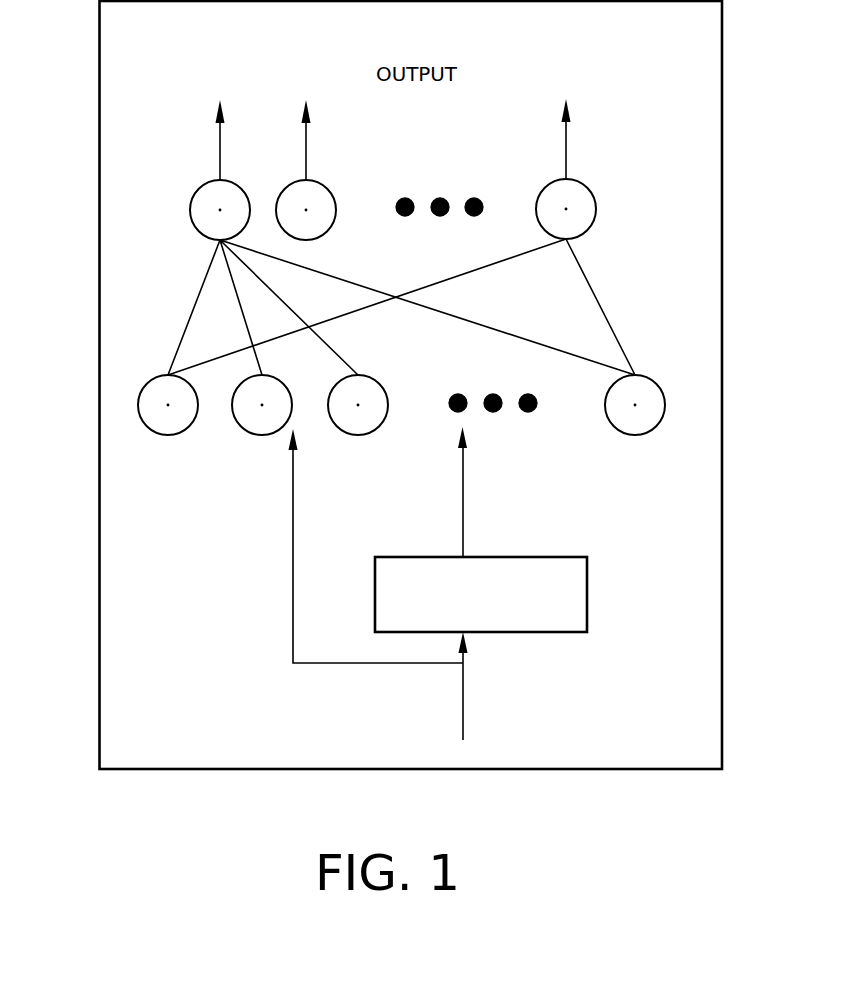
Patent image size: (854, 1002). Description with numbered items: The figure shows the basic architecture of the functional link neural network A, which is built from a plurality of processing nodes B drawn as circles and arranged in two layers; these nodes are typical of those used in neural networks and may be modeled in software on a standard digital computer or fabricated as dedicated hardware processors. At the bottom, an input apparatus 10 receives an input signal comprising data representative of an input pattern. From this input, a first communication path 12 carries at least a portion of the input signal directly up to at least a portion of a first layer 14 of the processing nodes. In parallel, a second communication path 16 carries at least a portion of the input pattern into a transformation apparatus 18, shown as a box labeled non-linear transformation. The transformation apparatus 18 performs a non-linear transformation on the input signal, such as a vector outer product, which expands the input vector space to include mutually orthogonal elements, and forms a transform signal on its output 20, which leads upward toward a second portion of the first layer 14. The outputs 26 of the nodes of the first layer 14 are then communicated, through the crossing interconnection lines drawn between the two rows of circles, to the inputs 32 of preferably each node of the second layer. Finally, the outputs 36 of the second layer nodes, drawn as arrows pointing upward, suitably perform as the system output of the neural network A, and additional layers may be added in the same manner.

The input apparatus 10 is at (463, 707).
The first communication path 12 is at (360, 663).
The first layer 14 is at (620, 431).
The second communication path 16 is at (463, 657).
The transformation apparatus 18 is at (587, 578).
The output of transformation apparatus 20 is at (463, 557).
The outputs of first layer nodes 26 is at (168, 375).
The inputs of second layer nodes 32 is at (220, 240).
The outputs of second layer nodes 36 is at (222, 178).
The neural network A is at (722, 594).
The processing nodes B is at (98, 380).